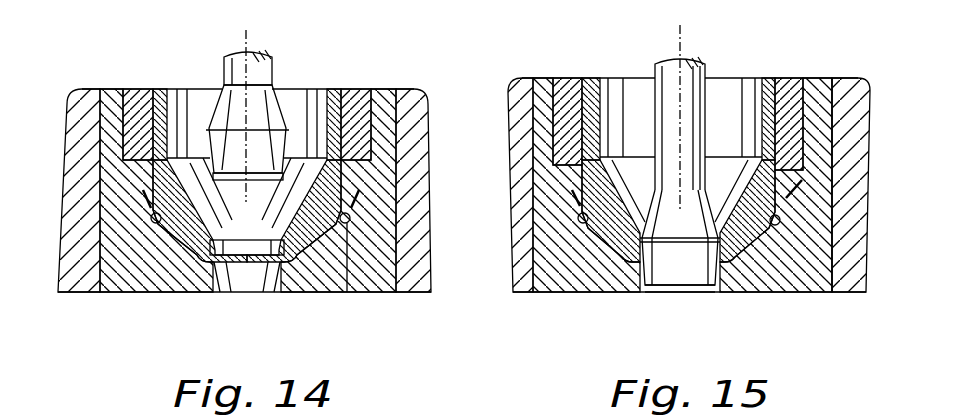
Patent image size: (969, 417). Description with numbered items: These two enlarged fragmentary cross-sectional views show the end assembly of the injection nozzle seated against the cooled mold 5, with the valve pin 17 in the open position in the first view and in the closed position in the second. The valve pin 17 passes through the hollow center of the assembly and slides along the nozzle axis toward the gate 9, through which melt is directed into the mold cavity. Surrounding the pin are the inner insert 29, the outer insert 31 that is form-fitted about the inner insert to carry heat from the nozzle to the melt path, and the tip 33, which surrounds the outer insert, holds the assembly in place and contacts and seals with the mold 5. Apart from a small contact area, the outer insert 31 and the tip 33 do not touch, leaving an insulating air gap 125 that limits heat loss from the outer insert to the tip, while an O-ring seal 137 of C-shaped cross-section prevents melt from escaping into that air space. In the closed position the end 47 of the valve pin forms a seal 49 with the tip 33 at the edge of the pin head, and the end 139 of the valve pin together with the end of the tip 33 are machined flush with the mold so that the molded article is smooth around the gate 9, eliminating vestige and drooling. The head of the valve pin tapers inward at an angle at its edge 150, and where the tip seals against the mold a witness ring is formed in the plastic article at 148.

In FIG. 14, the mold 5 is at (82, 291).
In FIG. 15, the mold 5 is at (527, 292).
In FIG. 14, the gate 9 is at (270, 293).
In FIG. 15, the gate 9 is at (666, 293).
In FIG. 14, the valve pin 17 is at (263, 73).
In FIG. 15, the valve pin 17 is at (690, 62).
In FIG. 14, the inner insert 29 is at (337, 90).
In FIG. 15, the inner insert 29 is at (768, 80).
In FIG. 14, the outer insert 31 is at (132, 92).
In FIG. 15, the outer insert 31 is at (795, 82).
In FIG. 14, the tip 33 is at (147, 291).
In FIG. 15, the tip 33 is at (543, 80).
In FIG. 14, the end of the valve pin 47 is at (233, 153).
In FIG. 15, the end of the valve pin 47 is at (670, 260).
In FIG. 15, the seal 49 is at (646, 268).
In FIG. 14, the air gap 125 is at (343, 212).
In FIG. 15, the air gap 125 is at (780, 208).
In FIG. 14, the O-ring seal 137 is at (345, 292).
In FIG. 15, the O-ring seal 137 is at (578, 218).
In FIG. 15, the end of the valve pin 139 is at (696, 297).
In FIG. 15, the witness ring 148 is at (832, 293).
In FIG. 14, the edge of the valve head 150 is at (138, 100).
In FIG. 15, the edge of the valve head 150 is at (760, 293).